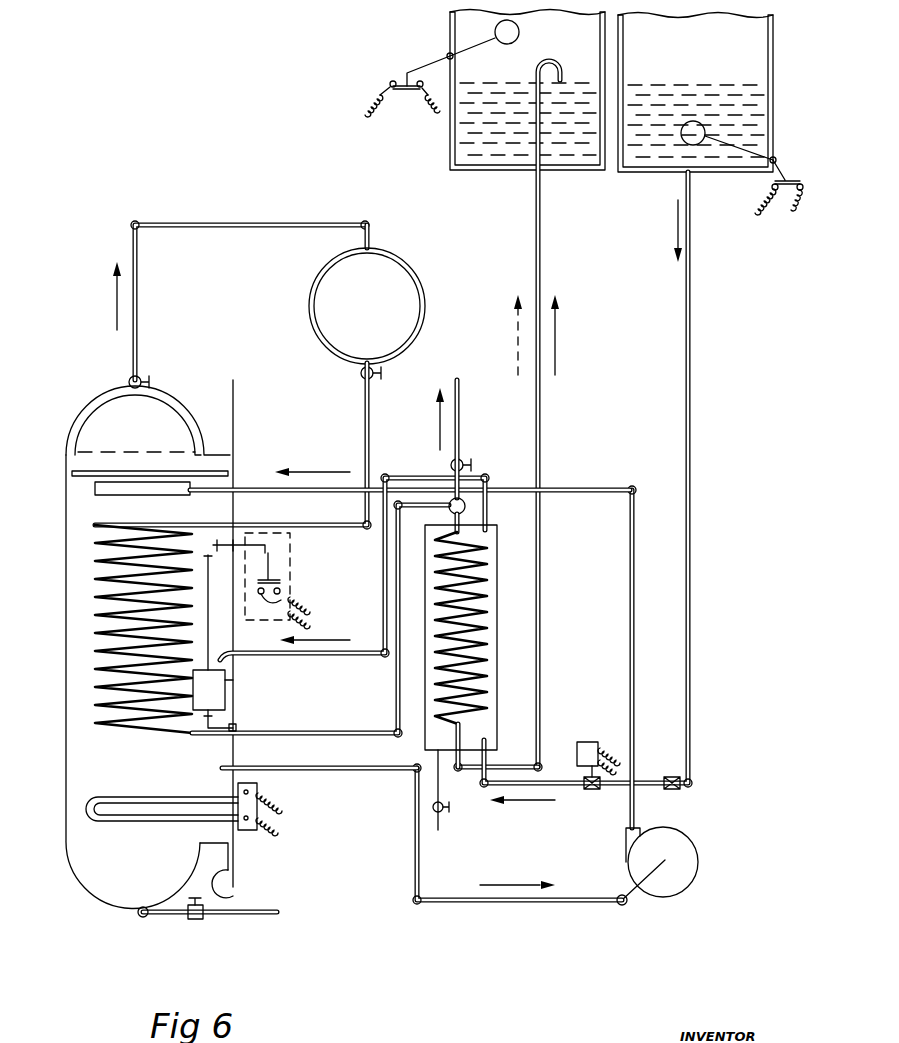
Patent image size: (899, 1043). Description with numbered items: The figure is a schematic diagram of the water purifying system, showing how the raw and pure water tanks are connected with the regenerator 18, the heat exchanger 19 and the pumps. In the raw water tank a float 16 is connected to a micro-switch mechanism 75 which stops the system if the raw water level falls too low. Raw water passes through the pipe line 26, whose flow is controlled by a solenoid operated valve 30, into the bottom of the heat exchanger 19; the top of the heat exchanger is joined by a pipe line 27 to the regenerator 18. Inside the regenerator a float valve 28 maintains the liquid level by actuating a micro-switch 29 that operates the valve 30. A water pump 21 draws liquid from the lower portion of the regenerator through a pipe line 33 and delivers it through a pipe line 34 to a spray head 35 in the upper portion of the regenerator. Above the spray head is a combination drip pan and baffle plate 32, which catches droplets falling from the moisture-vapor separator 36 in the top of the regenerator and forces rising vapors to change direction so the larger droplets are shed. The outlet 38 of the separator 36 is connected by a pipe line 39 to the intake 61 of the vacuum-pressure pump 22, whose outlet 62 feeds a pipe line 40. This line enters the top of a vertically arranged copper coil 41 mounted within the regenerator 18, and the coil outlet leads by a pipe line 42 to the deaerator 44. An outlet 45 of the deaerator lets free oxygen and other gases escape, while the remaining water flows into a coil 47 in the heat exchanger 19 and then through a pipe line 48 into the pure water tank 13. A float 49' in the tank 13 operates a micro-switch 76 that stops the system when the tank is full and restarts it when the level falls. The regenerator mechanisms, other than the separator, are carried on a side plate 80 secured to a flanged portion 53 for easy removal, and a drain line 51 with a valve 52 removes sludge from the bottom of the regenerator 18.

The pure water storage tank 13 is at (576, 172).
The float 16 is at (728, 136).
The regenerator 18 is at (70, 825).
The heat exchanger 19 is at (498, 710).
The water pump 21 is at (692, 848).
The vacuum-pressure pump 22 is at (427, 309).
The pipe line 26 is at (691, 402).
The pipe line 27 is at (478, 478).
The float valve 28 is at (228, 693).
The micro-switch 29 is at (270, 570).
The solenoid operated valve 30 is at (590, 796).
The combination drip pan and baffle plate 32 is at (230, 472).
The pipe line 33 is at (470, 903).
The pipe line 34 is at (634, 648).
The spray head 35 is at (93, 487).
The moisture-vapor separator 36 is at (167, 400).
The outlet of separator 38 is at (150, 388).
The pipe line 39 is at (247, 229).
The pipe line 40 is at (369, 420).
The copper coil 41 is at (108, 598).
The pipe line 42 is at (318, 735).
The deaerator 44 is at (466, 506).
The outlet of deaerator 45 is at (459, 420).
The coil 47 is at (482, 614).
The pipe line 48 is at (542, 470).
The float 49' is at (272, 428).
The drain line 51 is at (168, 916).
The valve 52 is at (197, 920).
The flanged portion 53 is at (234, 896).
The intake of vacuum-pressure pump 61 is at (356, 240).
The outlet of vacuum-pressure pump 62 is at (360, 364).
The micro-switch mechanism 75 is at (782, 222).
The micro-switch 76 is at (405, 92).
The side plate 80 is at (236, 868).